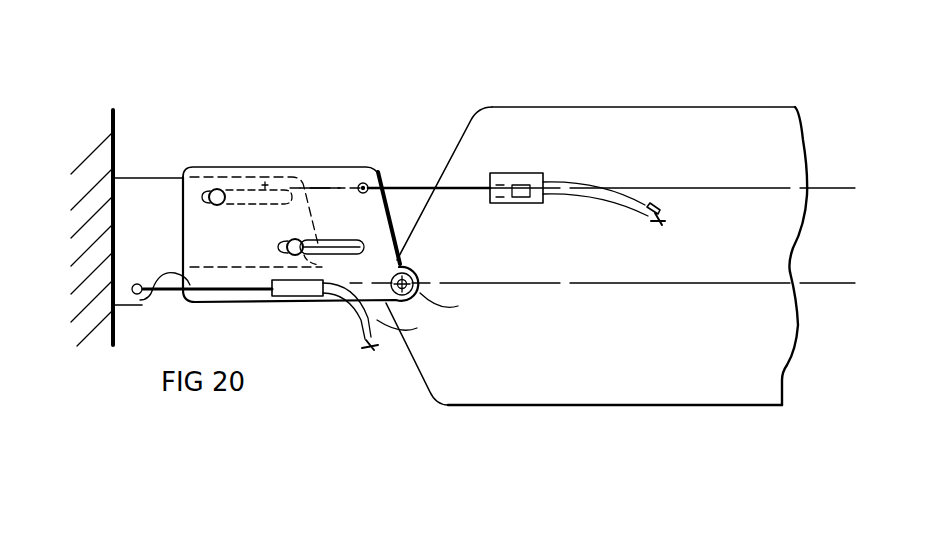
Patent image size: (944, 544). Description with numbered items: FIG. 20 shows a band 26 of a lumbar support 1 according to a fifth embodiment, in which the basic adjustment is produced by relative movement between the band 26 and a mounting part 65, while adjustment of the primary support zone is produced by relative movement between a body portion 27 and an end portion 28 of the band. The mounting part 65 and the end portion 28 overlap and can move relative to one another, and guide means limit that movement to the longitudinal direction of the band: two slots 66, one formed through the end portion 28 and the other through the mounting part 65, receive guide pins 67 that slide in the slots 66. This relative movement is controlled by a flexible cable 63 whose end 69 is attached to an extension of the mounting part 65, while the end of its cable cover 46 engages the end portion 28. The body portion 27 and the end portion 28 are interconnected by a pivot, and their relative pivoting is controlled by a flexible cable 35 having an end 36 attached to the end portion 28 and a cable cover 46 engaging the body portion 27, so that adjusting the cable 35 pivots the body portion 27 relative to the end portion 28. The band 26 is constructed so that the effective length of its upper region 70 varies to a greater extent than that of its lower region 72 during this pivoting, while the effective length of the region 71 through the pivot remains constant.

The hinge assembly 1 is at (414, 99).
The band 26 is at (507, 99).
The body portion 27 is at (608, 392).
The end portion 28 is at (331, 180).
The flexible cable 35 is at (580, 181).
The cable end 36 is at (362, 182).
The cable cover 46 is at (653, 207).
The flexible cable 63 is at (333, 306).
The mounting part 65 is at (141, 197).
The slots 66 is at (259, 146).
The guide pins 67 is at (222, 189).
The cable end 69 is at (144, 297).
The upper region 70 is at (744, 127).
The region through the pivot 71 is at (810, 282).
The lower region 72 is at (758, 339).